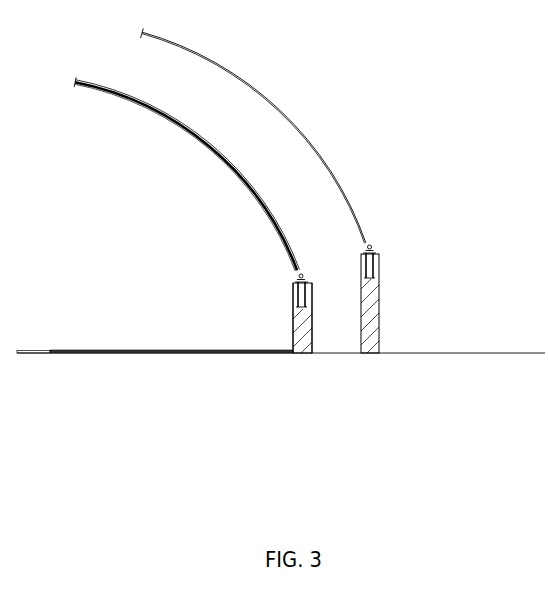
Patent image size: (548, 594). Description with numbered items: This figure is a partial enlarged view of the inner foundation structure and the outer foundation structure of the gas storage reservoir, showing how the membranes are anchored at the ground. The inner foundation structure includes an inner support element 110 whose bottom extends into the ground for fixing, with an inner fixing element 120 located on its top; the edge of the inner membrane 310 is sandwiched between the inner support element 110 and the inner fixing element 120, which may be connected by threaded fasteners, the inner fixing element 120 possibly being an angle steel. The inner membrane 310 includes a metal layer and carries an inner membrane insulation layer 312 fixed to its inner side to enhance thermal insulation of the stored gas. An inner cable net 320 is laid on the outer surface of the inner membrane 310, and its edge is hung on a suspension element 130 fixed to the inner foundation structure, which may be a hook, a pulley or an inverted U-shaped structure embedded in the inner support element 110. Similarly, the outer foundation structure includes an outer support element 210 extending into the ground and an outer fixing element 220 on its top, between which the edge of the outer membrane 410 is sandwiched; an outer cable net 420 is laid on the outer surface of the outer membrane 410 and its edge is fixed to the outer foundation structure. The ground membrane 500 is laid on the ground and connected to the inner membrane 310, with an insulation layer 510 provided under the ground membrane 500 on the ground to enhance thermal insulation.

The inner support element 110 is at (302, 344).
The inner fixing element 120 is at (297, 280).
The suspension element 130 is at (312, 284).
The outer support element 210 is at (371, 344).
The outer fixing element 220 is at (379, 255).
The inner membrane 310 is at (213, 152).
The inner membrane insulation layer 312 is at (244, 189).
The inner cable net 320 is at (222, 152).
The outer membrane 410 is at (361, 221).
The outer cable net 420 is at (346, 181).
The ground membrane 500 is at (293, 333).
The insulation layer 510 is at (200, 354).